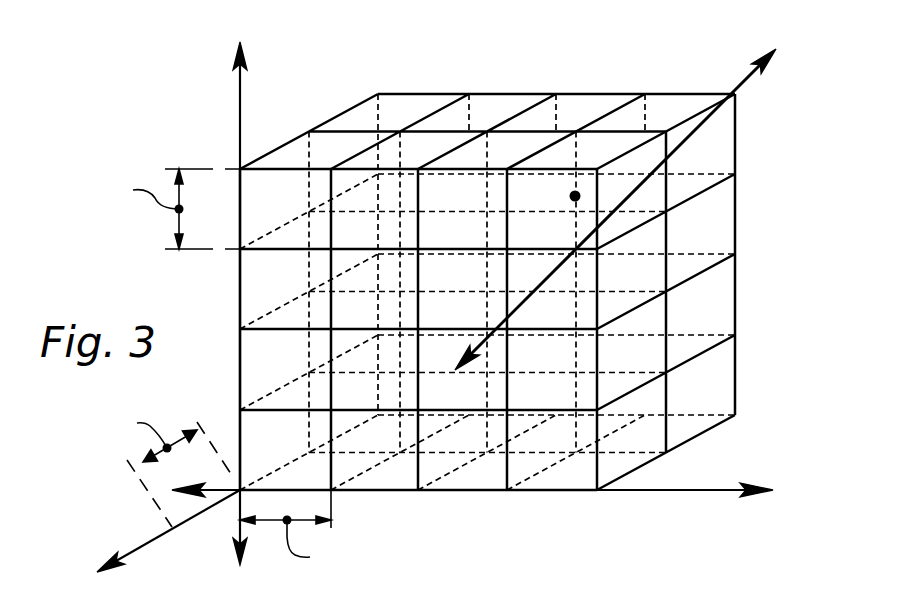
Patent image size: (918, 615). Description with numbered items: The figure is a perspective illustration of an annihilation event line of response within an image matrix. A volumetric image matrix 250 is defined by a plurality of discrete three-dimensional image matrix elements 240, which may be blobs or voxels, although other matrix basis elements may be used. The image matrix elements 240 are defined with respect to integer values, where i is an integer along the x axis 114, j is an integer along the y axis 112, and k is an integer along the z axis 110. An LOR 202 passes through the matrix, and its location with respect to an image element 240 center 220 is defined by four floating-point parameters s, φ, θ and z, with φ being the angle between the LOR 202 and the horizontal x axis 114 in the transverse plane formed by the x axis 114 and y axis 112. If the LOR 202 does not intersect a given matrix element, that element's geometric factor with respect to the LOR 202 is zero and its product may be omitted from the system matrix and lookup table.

The y axis 112 is at (240, 114).
The x axis 114 is at (633, 492).
The z axis 110 is at (147, 542).
The LOR 202 is at (690, 135).
The image element center 220 is at (568, 196).
The image matrix element 240 is at (597, 150).
The volumetric image matrix 250 is at (418, 94).